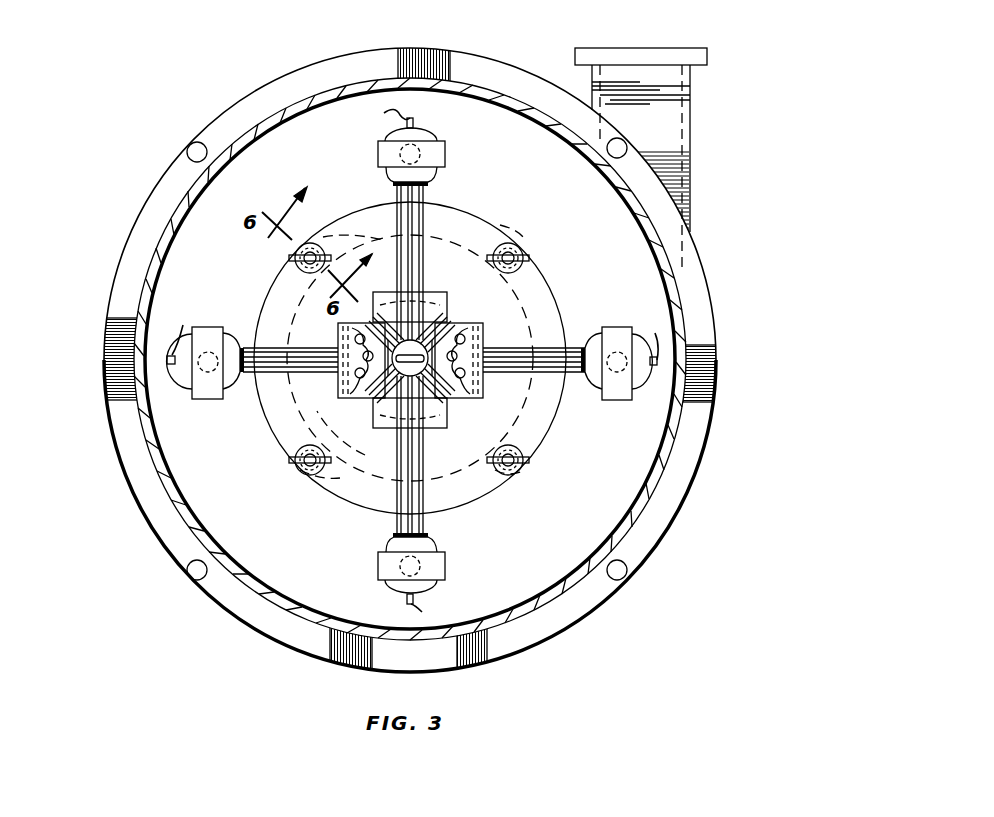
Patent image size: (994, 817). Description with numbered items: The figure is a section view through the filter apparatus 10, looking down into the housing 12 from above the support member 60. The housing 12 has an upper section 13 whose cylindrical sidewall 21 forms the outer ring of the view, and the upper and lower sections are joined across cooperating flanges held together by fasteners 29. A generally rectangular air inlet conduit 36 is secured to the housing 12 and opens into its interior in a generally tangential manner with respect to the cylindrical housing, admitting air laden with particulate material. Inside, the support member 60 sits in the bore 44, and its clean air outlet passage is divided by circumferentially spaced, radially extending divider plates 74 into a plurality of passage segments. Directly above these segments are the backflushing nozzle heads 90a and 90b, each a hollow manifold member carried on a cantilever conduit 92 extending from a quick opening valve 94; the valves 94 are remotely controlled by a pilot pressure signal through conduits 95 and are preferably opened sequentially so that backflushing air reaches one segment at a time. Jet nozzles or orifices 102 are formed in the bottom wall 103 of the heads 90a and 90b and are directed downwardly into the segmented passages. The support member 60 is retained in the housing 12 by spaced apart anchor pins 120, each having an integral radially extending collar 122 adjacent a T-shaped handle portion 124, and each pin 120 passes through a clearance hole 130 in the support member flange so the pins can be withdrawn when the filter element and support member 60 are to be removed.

The filter apparatus 10 is at (725, 467).
The housing 12 is at (668, 508).
The upper section 13 is at (572, 605).
The cylindrical sidewall 21 is at (512, 640).
The fasteners 29 is at (188, 150).
The air inlet conduit 36 is at (692, 155).
The bore 44 is at (340, 440).
The support member 60 is at (482, 518).
The divider plates 74 is at (405, 322).
The nozzle head 90a is at (352, 398).
The nozzle heads 90b is at (447, 292).
The cantilever conduit 92 is at (423, 205).
The quick opening valve 94 is at (445, 152).
The conduits 95 is at (412, 366).
The jet nozzles 102 is at (340, 340).
The bottom wall 103 is at (340, 328).
The anchor pins 120 is at (295, 258).
The collar 122 is at (305, 455).
The T-shaped handle portion 124 is at (328, 462).
The clearance hole 130 is at (320, 242).